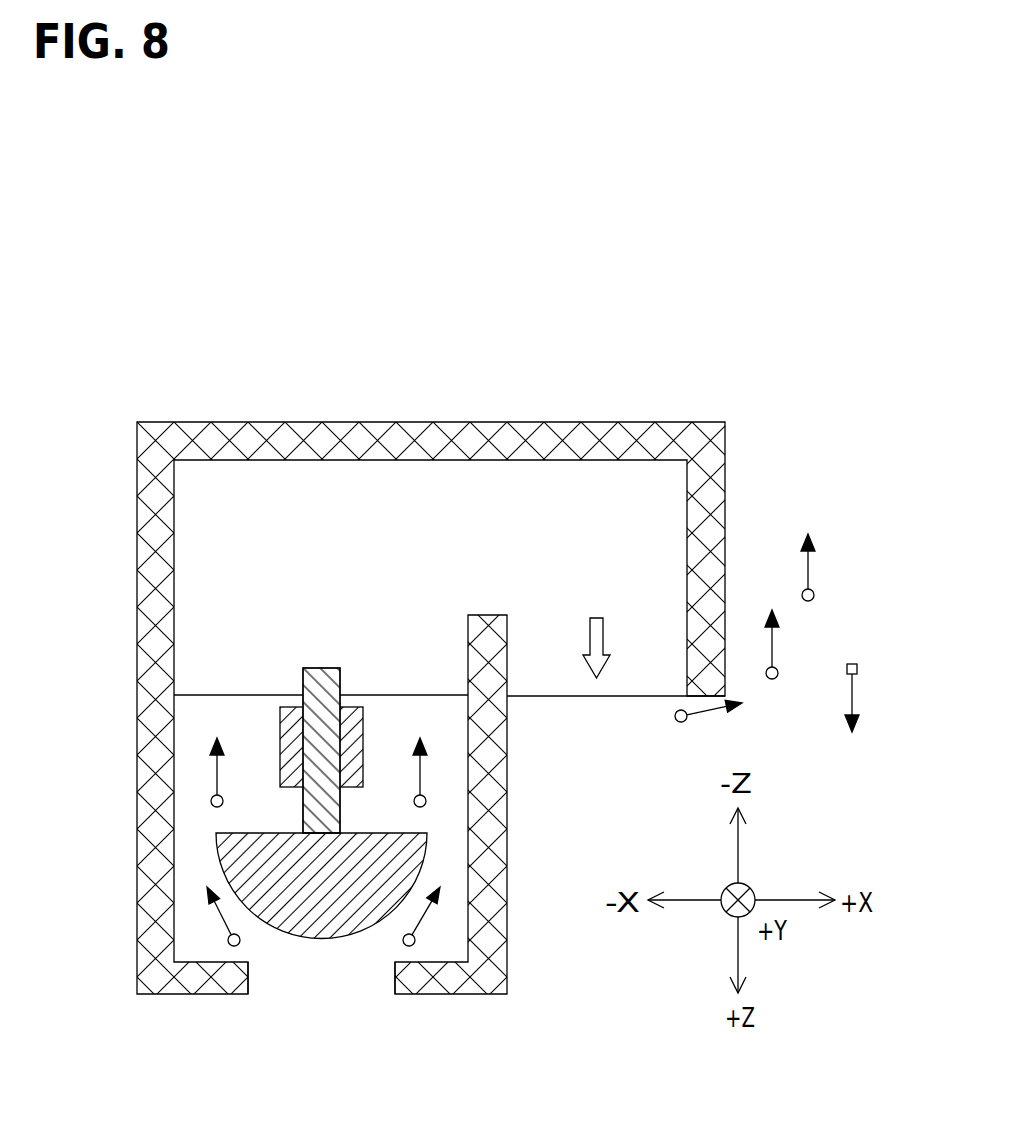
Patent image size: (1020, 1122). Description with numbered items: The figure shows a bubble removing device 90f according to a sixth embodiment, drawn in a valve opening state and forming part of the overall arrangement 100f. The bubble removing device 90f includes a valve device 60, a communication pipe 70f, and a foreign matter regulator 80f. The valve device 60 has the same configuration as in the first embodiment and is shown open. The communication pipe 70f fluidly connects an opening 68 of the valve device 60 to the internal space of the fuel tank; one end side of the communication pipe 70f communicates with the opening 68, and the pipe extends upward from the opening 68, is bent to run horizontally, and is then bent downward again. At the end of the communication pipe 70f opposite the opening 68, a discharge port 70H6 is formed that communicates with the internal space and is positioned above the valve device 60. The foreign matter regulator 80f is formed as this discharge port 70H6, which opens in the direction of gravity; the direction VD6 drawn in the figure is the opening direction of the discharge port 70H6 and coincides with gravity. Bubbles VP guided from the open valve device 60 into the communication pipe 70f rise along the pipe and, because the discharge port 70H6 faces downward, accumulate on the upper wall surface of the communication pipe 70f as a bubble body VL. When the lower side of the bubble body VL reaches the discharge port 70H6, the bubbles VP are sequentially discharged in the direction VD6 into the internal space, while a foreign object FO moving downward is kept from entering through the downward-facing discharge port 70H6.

The liquid ejection device 100f is at (485, 660).
The bubble removing device 90f is at (729, 422).
The communication pipe 70f is at (505, 460).
The discharge port 70H6 is at (625, 696).
The foreign matter regulator 80f is at (668, 772).
The valve device 60 is at (382, 765).
The opening 68 is at (249, 985).
The bubble body VL is at (430, 556).
The direction VD6 is at (596, 630).
The bubbles VP is at (210, 798).
The foreign object FO is at (852, 660).